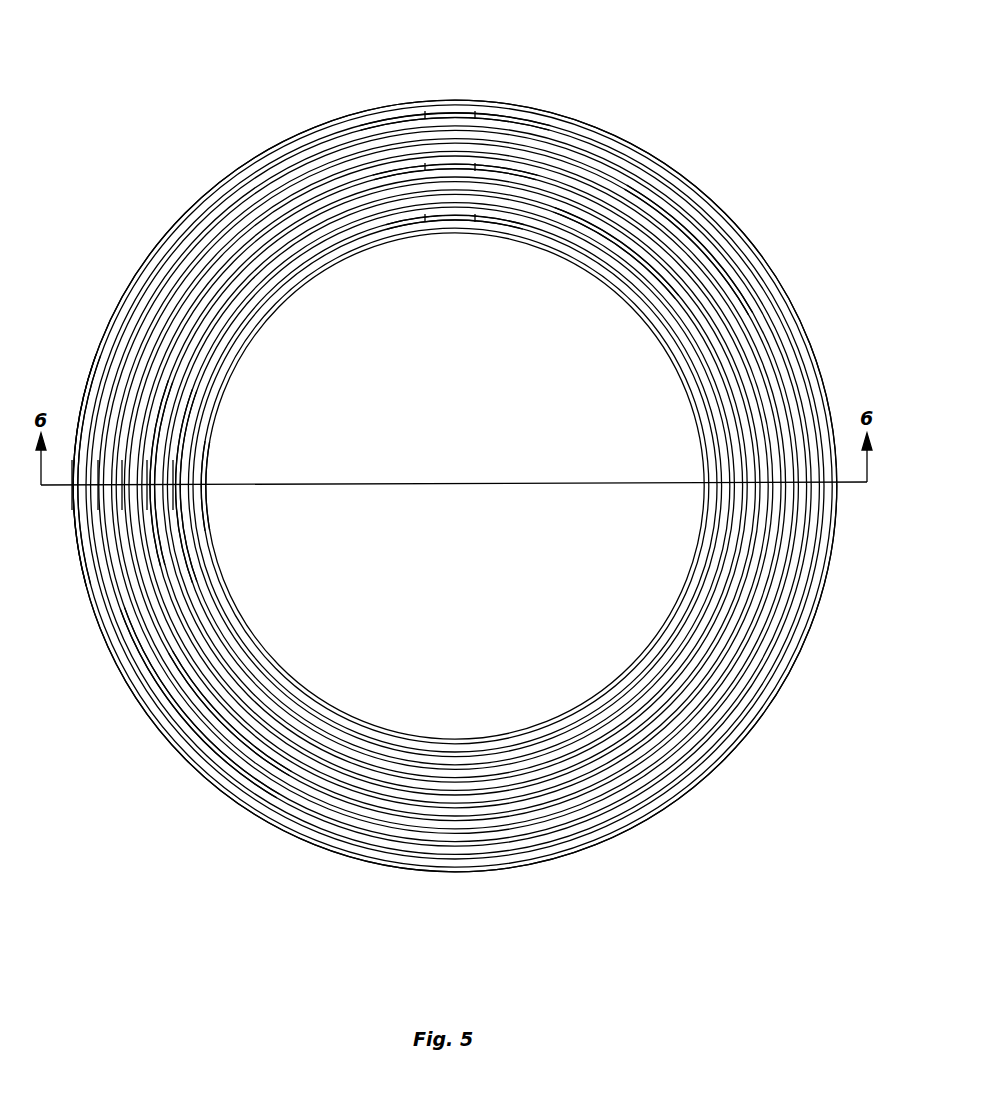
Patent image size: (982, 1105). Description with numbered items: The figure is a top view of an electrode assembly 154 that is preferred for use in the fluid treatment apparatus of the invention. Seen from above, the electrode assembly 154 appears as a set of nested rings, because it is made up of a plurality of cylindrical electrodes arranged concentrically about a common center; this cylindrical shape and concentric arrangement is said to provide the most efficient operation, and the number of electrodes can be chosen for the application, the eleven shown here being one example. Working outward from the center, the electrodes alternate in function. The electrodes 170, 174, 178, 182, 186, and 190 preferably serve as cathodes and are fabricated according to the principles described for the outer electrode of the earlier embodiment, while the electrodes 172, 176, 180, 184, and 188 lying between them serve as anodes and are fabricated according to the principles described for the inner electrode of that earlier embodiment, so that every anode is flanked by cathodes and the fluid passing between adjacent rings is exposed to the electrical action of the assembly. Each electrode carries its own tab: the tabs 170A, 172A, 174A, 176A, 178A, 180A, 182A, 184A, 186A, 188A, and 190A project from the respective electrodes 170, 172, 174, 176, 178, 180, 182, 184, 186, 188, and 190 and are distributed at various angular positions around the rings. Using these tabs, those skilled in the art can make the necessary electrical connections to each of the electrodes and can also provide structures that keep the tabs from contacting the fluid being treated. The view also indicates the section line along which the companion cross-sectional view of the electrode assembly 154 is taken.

The electrode assembly 154 is at (253, 848).
The electrode 170 is at (212, 420).
The electrode 172 is at (210, 380).
The electrode 174 is at (214, 343).
The electrode 176 is at (228, 300).
The electrode 178 is at (203, 320).
The electrode 180 is at (193, 313).
The electrode 182 is at (185, 287).
The electrode 184 is at (190, 233).
The electrode 186 is at (207, 207).
The electrode 188 is at (233, 172).
The electrode 190 is at (260, 155).
The tab 170A is at (204, 478).
The tab 172A is at (457, 218).
The tab 174A is at (150, 497).
The tab 176A is at (653, 270).
The tab 178A is at (173, 497).
The tab 180A is at (460, 167).
The tab 182A is at (125, 560).
The tab 184A is at (700, 247).
The tab 186A is at (100, 553).
The tab 188A is at (460, 113).
The tab 190A is at (73, 497).